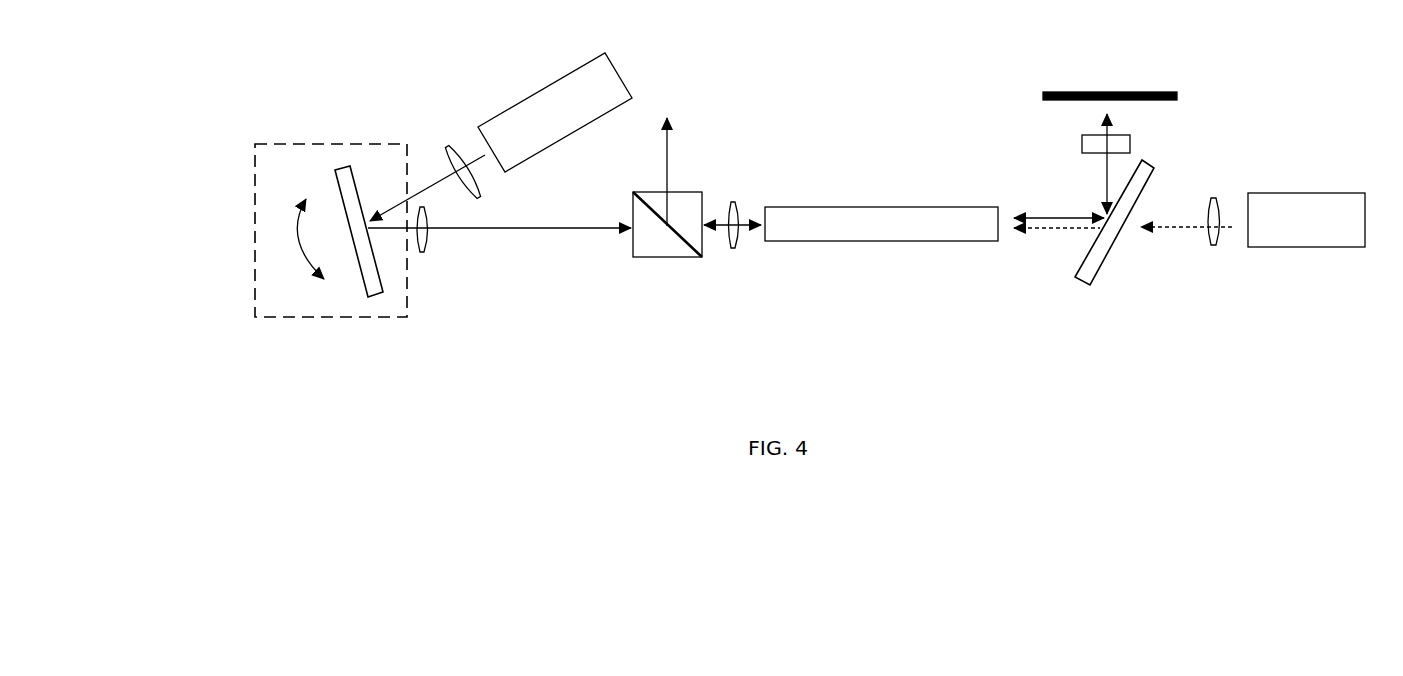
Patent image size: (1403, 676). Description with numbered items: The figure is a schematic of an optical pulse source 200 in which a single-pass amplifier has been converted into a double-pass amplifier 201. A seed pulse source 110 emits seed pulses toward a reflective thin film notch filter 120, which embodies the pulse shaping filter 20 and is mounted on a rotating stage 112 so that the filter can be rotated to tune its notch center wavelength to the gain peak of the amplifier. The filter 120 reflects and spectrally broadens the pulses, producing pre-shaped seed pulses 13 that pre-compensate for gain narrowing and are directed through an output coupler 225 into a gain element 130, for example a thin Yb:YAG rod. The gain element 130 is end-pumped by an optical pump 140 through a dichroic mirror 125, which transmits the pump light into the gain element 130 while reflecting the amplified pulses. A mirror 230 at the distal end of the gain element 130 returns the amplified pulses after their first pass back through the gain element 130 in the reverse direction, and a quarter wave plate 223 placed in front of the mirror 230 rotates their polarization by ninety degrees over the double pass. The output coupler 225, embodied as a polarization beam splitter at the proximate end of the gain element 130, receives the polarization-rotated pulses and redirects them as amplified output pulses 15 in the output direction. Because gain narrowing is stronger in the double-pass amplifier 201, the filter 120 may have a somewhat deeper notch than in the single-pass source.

The pulse shaping filter 20 is at (319, 86).
The seed pulse source 110 is at (505, 107).
The rotating stage 112 is at (370, 143).
The reflective thin film notch filter 120 is at (336, 167).
The pre-shaped seed pulses 13 is at (565, 222).
The amplified output pulses 15 is at (667, 152).
The output coupler 225 is at (658, 262).
The gain element 130 is at (898, 207).
The optical pulse source 200 is at (831, 44).
The quarter wave plate 223 is at (1073, 145).
The mirror 230 is at (1143, 90).
The dichroic mirror 125 is at (1145, 175).
The optical pump 140 is at (1260, 245).
The double-pass amplifier 201 is at (940, 338).